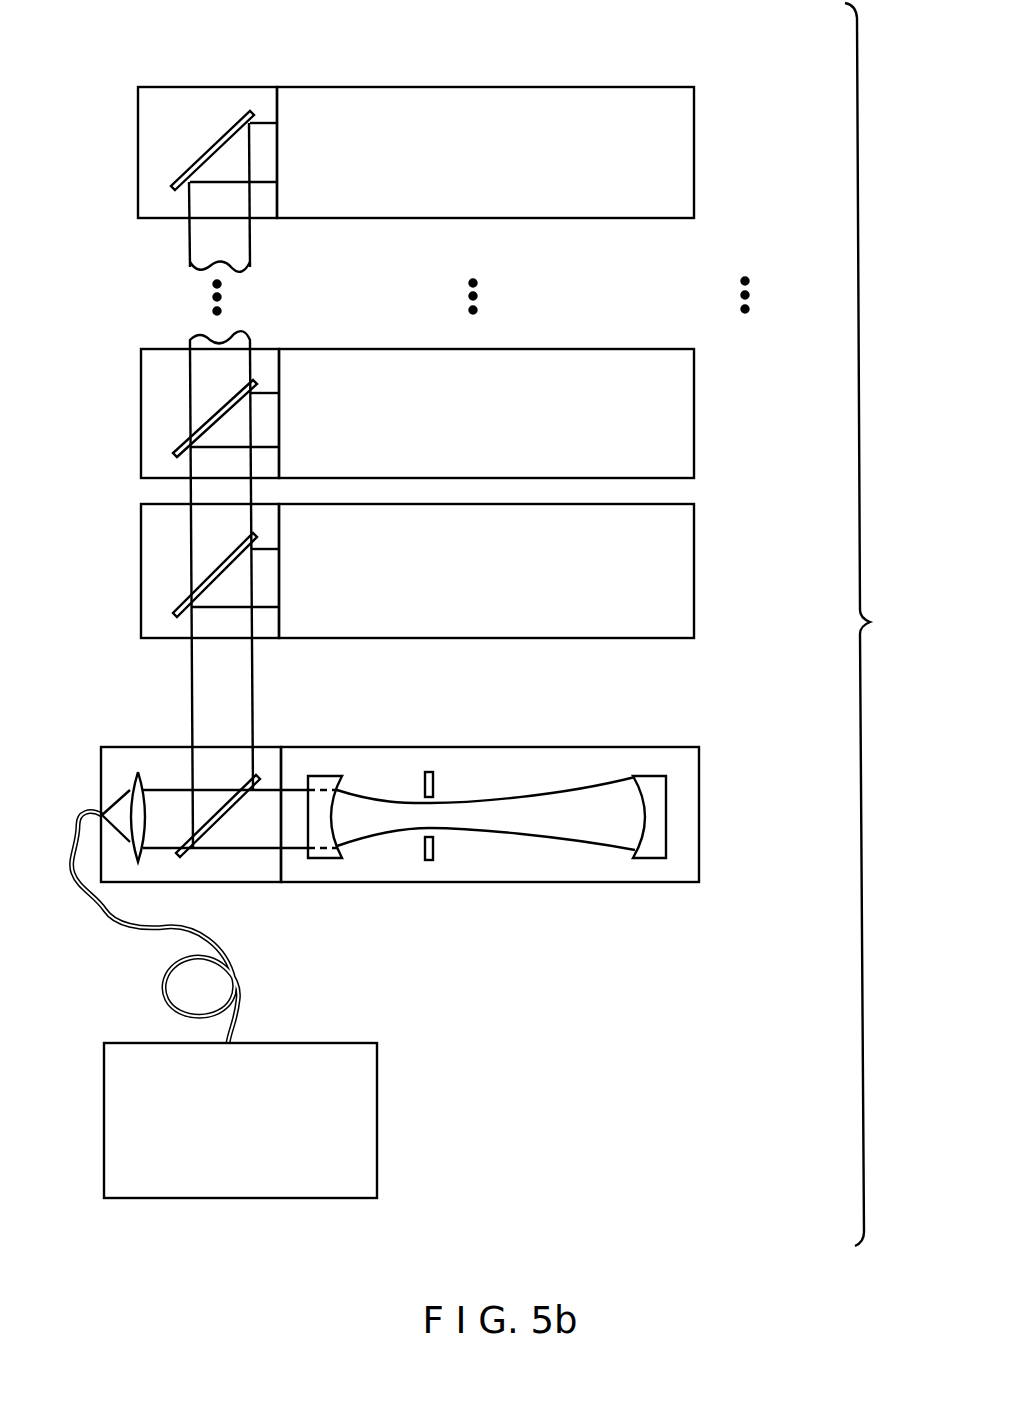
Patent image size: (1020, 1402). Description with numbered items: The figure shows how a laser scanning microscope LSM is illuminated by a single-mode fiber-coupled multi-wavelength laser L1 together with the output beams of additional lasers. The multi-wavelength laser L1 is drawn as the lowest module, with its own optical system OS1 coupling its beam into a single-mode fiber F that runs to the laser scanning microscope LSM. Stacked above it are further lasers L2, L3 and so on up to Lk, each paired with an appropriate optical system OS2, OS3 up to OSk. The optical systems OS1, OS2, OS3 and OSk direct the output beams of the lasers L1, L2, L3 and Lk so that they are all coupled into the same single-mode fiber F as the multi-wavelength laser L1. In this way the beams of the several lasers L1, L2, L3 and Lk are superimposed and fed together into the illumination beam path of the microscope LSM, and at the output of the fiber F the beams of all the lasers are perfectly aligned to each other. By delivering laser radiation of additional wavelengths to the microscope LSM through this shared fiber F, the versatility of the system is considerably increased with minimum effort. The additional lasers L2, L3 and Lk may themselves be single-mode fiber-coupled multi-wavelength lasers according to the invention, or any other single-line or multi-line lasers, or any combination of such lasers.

The optical system OSk is at (170, 152).
The laser Lk is at (517, 152).
The optical system OS3 is at (172, 413).
The laser L3 is at (519, 413).
The optical system OS2 is at (172, 571).
The laser L2 is at (519, 571).
The optical system OS1 is at (170, 814).
The single-mode fiber-coupled multi-wavelength laser L1 is at (521, 814).
The single-mode fiber F is at (168, 927).
The laser scanning microscope LSM is at (240, 1120).